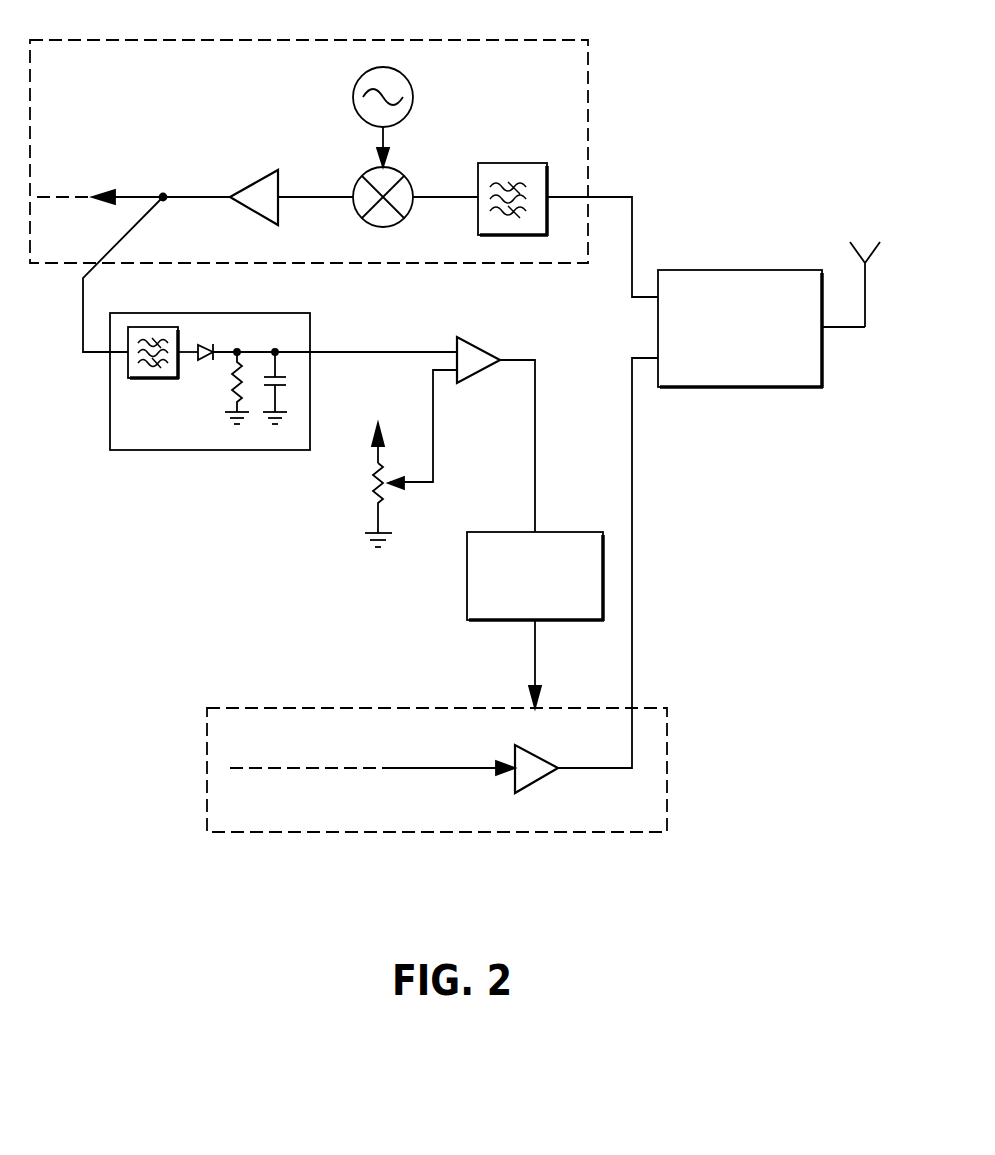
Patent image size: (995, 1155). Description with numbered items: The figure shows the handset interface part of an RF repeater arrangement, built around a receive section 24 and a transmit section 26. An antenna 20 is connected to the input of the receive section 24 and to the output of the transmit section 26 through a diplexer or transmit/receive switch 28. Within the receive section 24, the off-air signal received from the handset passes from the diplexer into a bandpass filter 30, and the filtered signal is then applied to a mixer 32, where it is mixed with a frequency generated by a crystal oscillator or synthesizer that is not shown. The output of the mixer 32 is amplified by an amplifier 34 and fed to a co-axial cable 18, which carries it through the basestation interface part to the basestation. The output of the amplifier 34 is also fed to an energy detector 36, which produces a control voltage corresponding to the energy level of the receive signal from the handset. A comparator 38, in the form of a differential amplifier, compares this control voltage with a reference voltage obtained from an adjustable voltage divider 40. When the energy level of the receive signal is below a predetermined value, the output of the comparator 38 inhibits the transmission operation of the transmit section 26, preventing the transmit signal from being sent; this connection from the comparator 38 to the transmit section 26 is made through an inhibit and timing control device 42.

The co-axial cable 18 is at (141, 195).
The antenna 20 is at (867, 297).
The receive section 24 is at (588, 93).
The transmit section 26 is at (420, 832).
The diplexer or transmit/receive switch 28 is at (753, 387).
The bandpass filter 30 is at (505, 163).
The mixer 32 is at (362, 170).
The amplifier 34 is at (258, 181).
The energy detector 36 is at (185, 450).
The comparator 38 is at (478, 375).
The adjustable voltage divider 40 is at (372, 481).
The inhibit and timing control device 42 is at (467, 590).